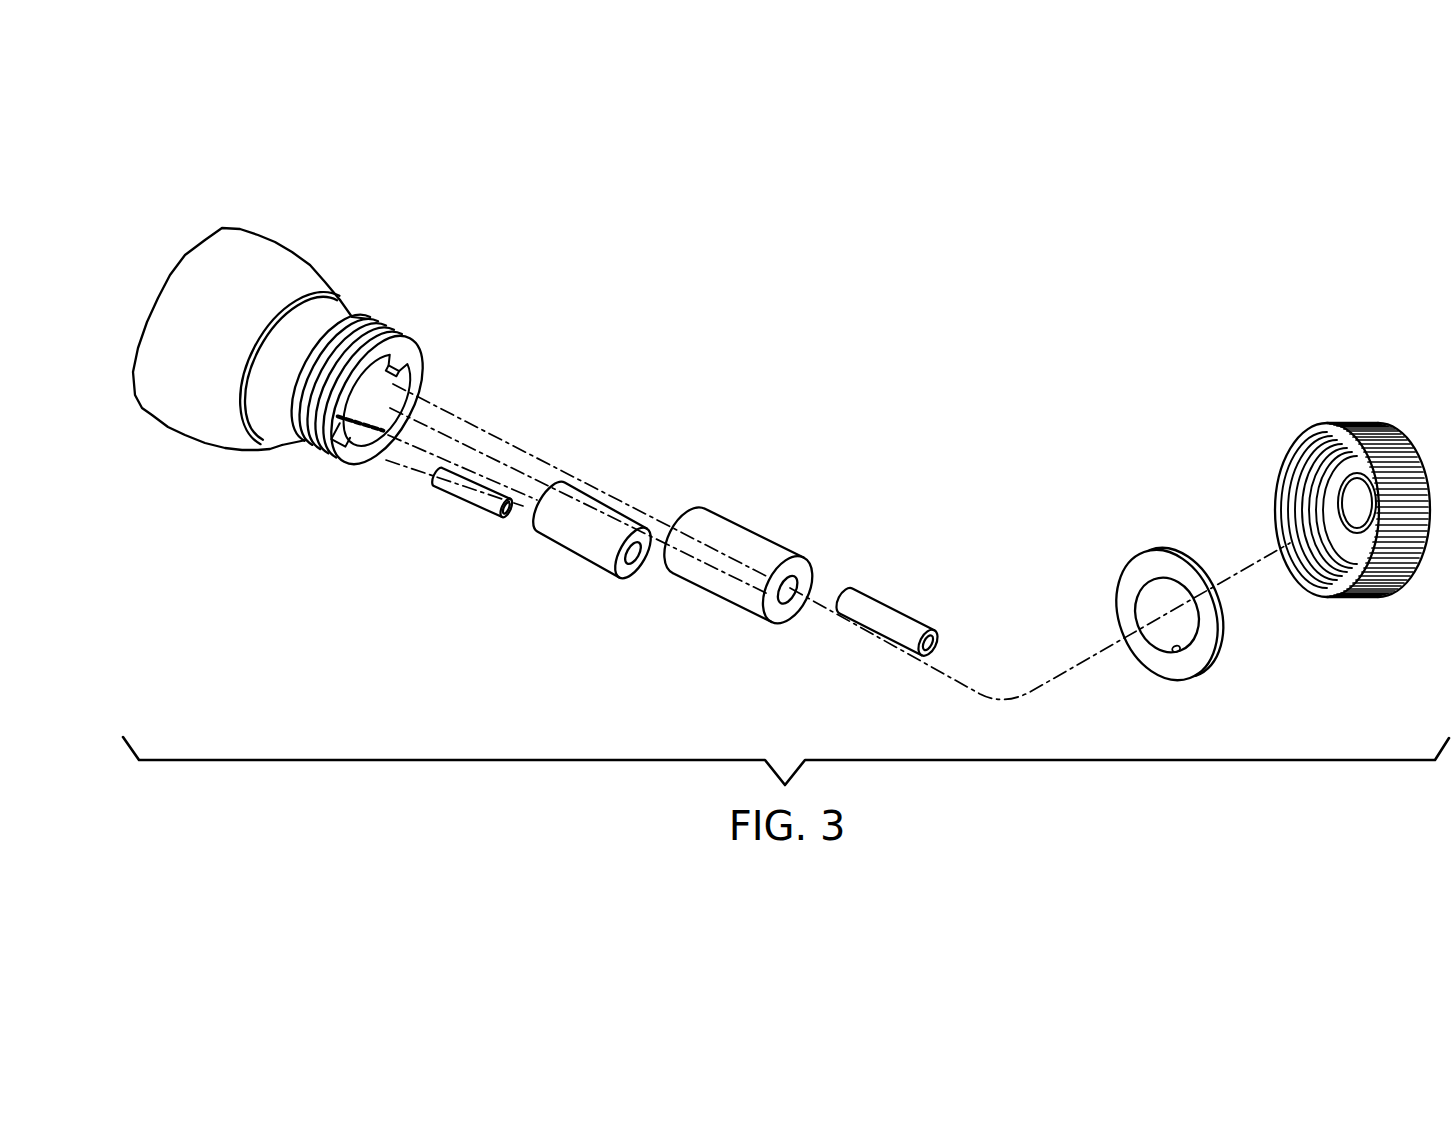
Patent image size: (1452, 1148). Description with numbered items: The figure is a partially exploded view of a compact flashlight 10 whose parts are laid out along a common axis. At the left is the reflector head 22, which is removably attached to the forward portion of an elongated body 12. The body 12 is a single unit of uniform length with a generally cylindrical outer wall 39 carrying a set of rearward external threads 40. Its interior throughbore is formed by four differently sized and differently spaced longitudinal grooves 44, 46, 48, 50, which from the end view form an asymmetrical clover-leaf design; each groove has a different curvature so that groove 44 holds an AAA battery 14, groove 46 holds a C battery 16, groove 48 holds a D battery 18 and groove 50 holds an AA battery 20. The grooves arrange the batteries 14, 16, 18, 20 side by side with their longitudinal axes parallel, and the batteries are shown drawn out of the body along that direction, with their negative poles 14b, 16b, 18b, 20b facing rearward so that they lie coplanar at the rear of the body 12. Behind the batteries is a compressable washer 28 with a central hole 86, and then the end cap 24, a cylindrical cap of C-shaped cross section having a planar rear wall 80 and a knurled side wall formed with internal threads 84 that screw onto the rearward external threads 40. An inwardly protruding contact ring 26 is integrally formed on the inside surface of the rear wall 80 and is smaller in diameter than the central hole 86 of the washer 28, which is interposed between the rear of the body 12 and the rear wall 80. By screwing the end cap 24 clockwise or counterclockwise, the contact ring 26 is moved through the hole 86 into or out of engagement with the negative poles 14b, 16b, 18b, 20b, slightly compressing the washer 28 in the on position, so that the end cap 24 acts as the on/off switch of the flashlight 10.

The compact flashlight 10 is at (946, 363).
The elongated body 12 is at (393, 388).
The battery 14 is at (475, 534).
The negative pole 14b is at (506, 514).
The battery 16 is at (595, 567).
The negative pole 16b is at (633, 563).
The battery 18 is at (756, 537).
The negative pole 18b is at (783, 575).
The battery 20 is at (925, 607).
The negative pole 20b is at (938, 644).
The reflector head 22 is at (292, 251).
The end cap 24 is at (1329, 510).
The contact ring 26 is at (1332, 514).
The compressable washer 28 is at (1165, 613).
The cylindrical outer wall 39 is at (292, 428).
The rearward external threads 40 is at (408, 342).
The longitudinal groove 44 is at (366, 442).
The longitudinal groove 46 is at (346, 443).
The longitudinal groove 48 is at (415, 380).
The longitudinal groove 50 is at (382, 366).
The planar rear wall 80 is at (1412, 565).
The internal threads 84 is at (1341, 580).
The central hole 86 is at (1174, 655).